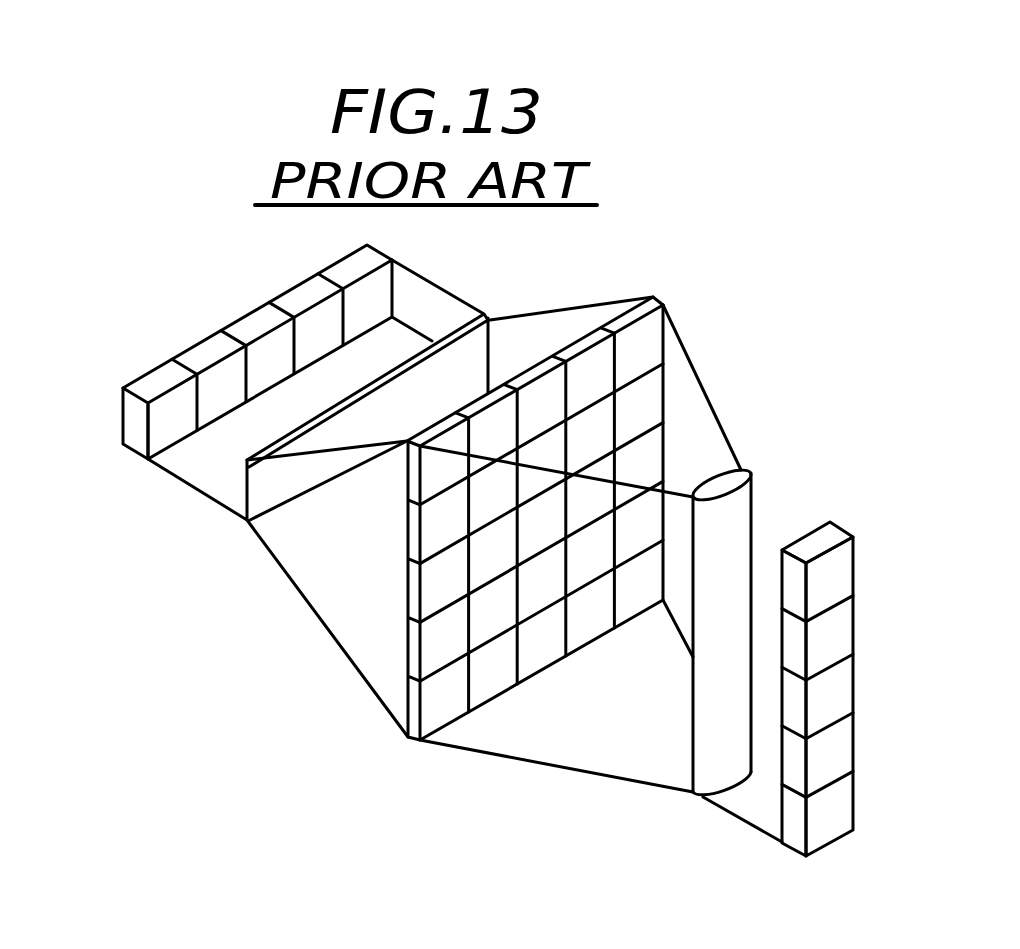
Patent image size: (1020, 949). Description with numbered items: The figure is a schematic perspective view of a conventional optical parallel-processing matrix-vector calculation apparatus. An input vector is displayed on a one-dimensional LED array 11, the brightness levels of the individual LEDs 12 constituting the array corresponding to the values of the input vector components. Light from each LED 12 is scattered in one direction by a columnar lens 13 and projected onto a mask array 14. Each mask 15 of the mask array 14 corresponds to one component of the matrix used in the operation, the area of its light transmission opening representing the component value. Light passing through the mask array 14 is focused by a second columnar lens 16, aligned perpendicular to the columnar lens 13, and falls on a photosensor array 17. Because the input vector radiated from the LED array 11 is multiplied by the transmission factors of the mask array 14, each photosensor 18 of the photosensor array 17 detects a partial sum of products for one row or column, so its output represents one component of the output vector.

The one-dimensional LED array 11 is at (295, 414).
The LED 12 is at (295, 298).
The columnar lens 13 is at (247, 461).
The mask array 14 is at (477, 485).
The mask 15 is at (643, 340).
The columnar lens 16 is at (727, 487).
The photosensor array 17 is at (847, 644).
The photosensor 18 is at (843, 702).